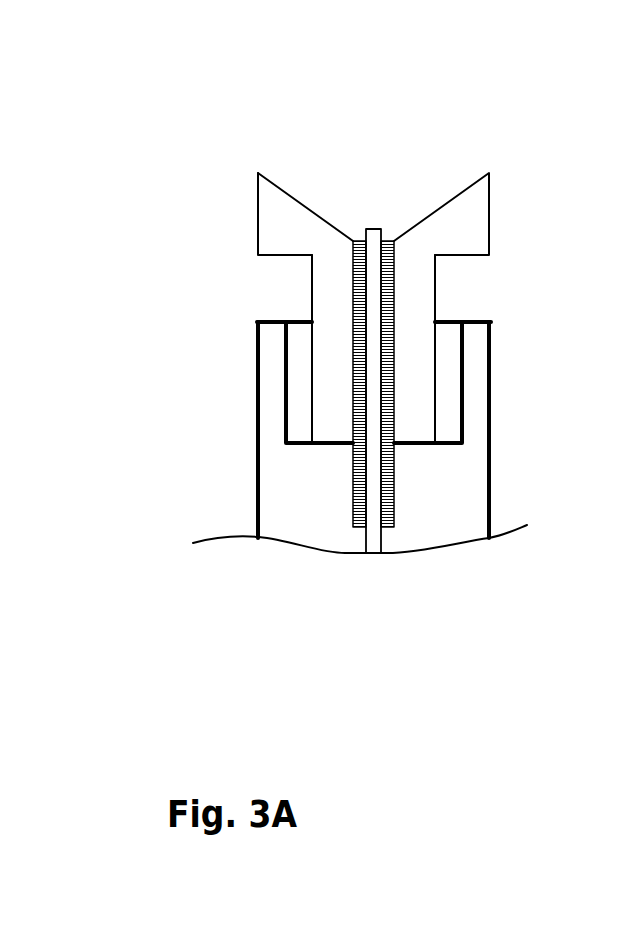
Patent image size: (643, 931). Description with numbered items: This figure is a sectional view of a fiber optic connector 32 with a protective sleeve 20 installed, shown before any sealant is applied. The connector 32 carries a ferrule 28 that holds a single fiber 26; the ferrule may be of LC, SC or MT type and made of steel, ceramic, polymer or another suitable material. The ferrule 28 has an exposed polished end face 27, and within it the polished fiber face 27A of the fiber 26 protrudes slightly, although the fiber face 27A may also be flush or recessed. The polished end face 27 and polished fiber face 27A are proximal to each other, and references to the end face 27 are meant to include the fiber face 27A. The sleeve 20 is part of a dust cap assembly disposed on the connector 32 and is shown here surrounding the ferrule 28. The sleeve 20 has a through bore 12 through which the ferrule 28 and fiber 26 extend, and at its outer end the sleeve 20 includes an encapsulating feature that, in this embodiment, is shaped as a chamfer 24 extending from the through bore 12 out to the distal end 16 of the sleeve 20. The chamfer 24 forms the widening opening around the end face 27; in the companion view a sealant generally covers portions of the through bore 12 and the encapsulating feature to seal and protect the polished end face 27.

The through bore 12 is at (355, 362).
The distal end 16 is at (257, 172).
The sleeve 20 is at (327, 285).
The chamfer 24 is at (303, 207).
The single fiber 26 is at (372, 290).
The polished end face 27 is at (388, 240).
The polished fiber face 27A is at (373, 228).
The ferrule 28 is at (386, 326).
The fiber optic connector 32 is at (467, 488).